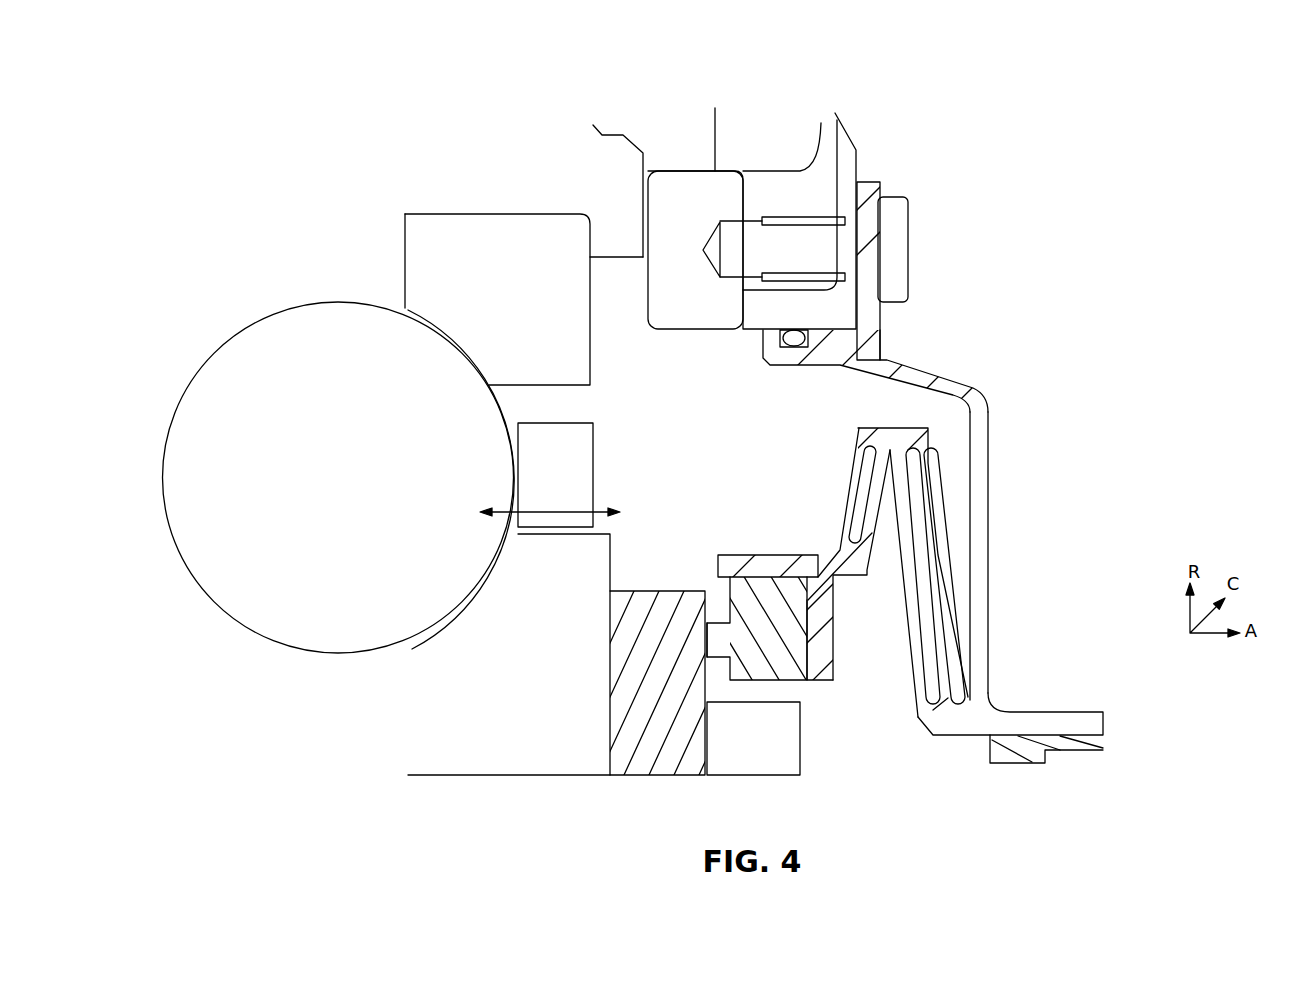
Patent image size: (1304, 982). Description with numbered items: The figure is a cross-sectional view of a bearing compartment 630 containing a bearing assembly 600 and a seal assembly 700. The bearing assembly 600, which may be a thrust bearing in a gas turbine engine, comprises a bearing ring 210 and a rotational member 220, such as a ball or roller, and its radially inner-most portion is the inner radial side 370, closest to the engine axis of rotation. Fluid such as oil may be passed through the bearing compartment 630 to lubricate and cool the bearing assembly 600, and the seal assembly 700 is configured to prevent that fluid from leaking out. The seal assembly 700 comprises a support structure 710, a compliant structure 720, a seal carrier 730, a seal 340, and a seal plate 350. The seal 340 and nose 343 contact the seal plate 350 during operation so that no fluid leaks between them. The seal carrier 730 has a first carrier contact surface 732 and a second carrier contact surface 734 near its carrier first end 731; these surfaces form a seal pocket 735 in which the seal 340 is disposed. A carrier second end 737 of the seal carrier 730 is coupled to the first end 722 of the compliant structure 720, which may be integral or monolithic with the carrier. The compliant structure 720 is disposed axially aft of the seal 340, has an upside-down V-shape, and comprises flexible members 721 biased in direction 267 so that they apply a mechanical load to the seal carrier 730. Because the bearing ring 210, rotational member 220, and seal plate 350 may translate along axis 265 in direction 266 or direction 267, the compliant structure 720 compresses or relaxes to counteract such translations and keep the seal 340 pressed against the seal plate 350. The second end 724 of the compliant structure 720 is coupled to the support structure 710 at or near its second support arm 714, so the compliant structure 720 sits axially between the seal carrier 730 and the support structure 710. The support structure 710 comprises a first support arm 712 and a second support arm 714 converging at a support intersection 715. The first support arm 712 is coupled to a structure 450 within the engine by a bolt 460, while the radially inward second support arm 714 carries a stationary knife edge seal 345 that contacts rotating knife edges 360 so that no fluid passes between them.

The bearing ring 210 is at (535, 214).
The rotational member 220 is at (338, 477).
The bearing assembly 600 is at (393, 237).
The axis 265 is at (557, 510).
The direction 266 is at (605, 515).
The direction 267 is at (490, 511).
The bearing compartment 630 is at (698, 426).
The structure 450 is at (853, 151).
The bolt 460 is at (900, 210).
The seal assembly 700 is at (980, 300).
The first support arm 712 is at (885, 356).
The support intersection 715 is at (978, 386).
The support structure 710 is at (990, 510).
The second support arm 714 is at (990, 664).
The knife edge seal 345 is at (1103, 742).
The knife edges 360 is at (1020, 767).
The compliant structure 720 is at (845, 419).
The flexible members 721 is at (873, 485).
The first end 722 is at (852, 546).
The second end 724 is at (942, 704).
The first carrier contact surface 732 is at (765, 576).
The carrier second end 737 is at (828, 550).
The seal carrier 730 is at (833, 580).
The second carrier contact surface 734 is at (818, 636).
The seal pocket 735 is at (822, 600).
The carrier first end 731 is at (818, 683).
The nose 343 is at (720, 645).
The seal 340 is at (760, 664).
The seal plate 350 is at (637, 752).
The inner radial side 370 is at (558, 810).